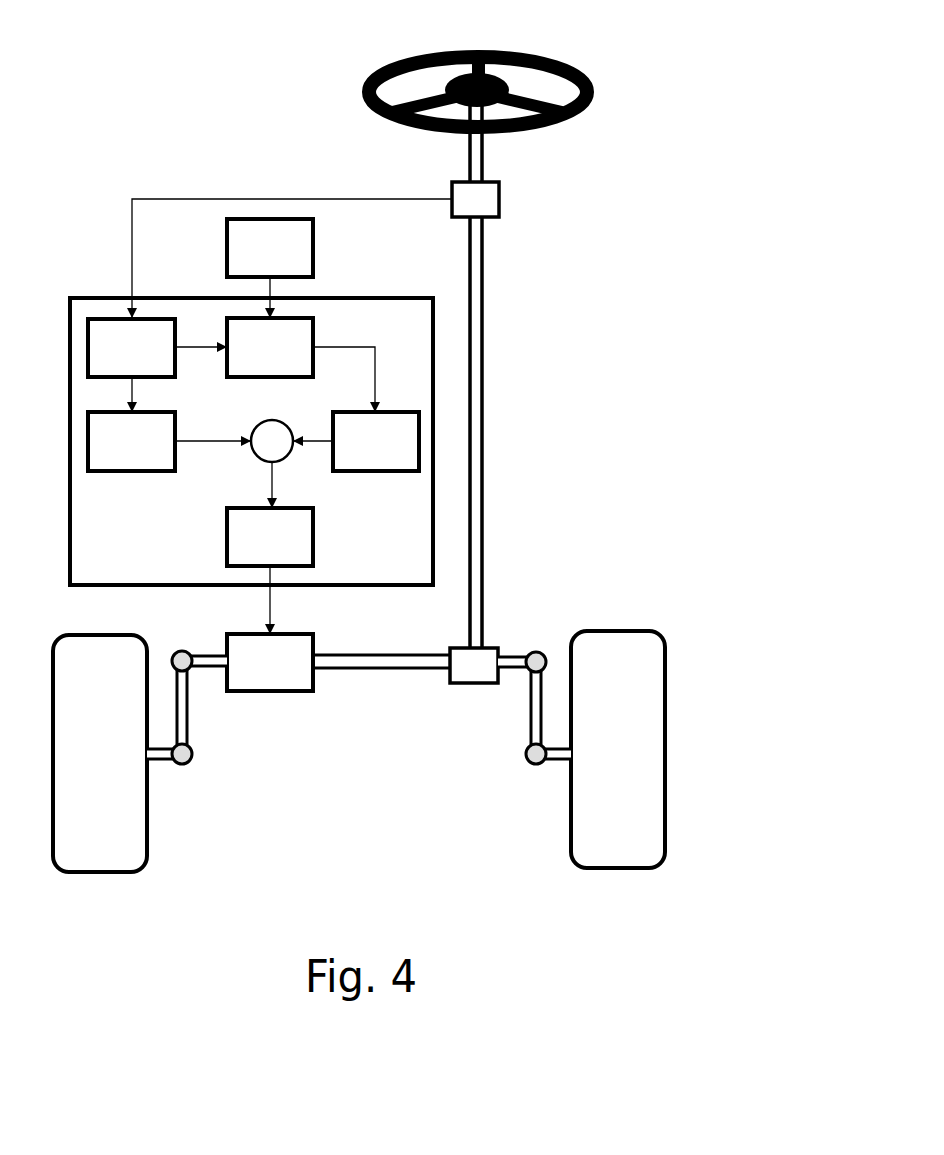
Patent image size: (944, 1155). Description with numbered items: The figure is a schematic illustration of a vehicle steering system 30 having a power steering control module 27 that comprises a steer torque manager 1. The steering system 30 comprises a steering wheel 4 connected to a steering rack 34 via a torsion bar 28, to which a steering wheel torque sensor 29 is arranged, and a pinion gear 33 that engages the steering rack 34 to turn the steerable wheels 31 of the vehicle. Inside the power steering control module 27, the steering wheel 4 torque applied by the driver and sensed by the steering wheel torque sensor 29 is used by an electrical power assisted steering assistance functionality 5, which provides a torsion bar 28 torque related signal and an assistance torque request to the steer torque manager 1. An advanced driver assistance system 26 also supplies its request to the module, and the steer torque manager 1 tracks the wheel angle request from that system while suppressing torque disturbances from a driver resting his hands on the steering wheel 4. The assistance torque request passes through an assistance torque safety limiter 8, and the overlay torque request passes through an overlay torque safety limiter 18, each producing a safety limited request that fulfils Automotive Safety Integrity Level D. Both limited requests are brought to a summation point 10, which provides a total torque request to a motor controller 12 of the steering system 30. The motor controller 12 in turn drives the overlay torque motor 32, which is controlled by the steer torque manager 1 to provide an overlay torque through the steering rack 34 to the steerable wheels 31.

The steering wheel 4 is at (518, 50).
The torsion bar 28 is at (475, 302).
The steering wheel torque sensor 29 is at (485, 202).
The steering system 30 is at (508, 468).
The power steering control module 27 is at (325, 296).
The advanced driver assistance system 26 is at (270, 248).
The electrical power assisted steering assistance functionality 5 is at (131, 348).
The steer torque manager 1 is at (270, 347).
The assistance torque safety limiter 8 is at (131, 441).
The overlay torque safety limiter 18 is at (376, 441).
The summation point 10 is at (269, 452).
The motor controller 12 is at (270, 537).
The overlay torque motor 32 is at (270, 662).
The steering rack 34 is at (382, 663).
The pinion gear 33 is at (472, 662).
The steerable wheels 31 is at (359, 751).